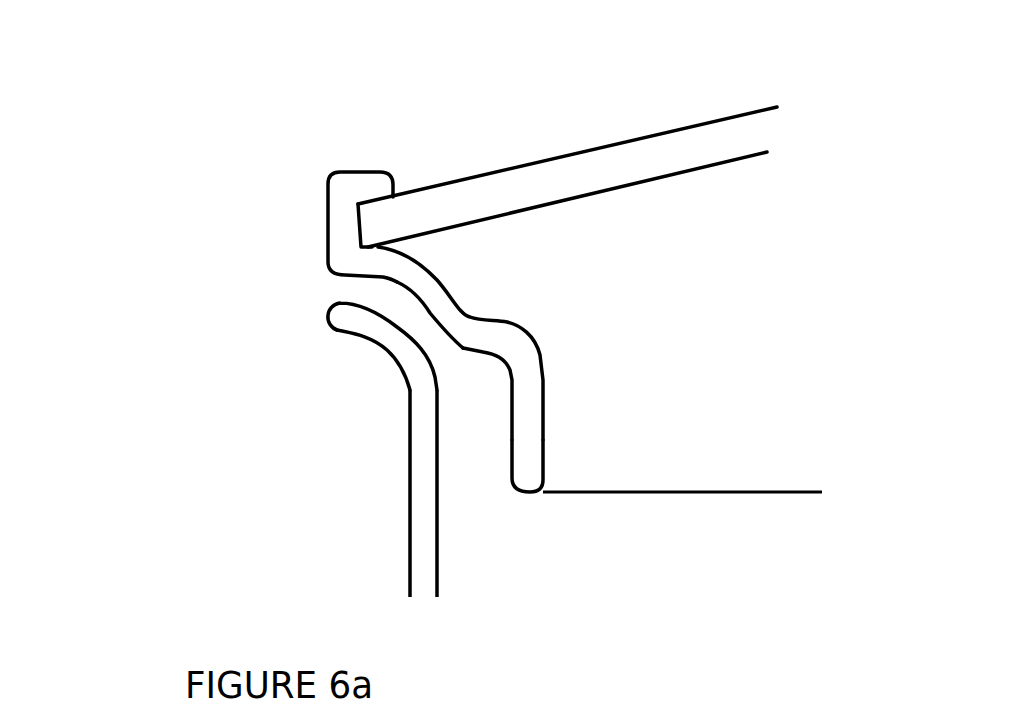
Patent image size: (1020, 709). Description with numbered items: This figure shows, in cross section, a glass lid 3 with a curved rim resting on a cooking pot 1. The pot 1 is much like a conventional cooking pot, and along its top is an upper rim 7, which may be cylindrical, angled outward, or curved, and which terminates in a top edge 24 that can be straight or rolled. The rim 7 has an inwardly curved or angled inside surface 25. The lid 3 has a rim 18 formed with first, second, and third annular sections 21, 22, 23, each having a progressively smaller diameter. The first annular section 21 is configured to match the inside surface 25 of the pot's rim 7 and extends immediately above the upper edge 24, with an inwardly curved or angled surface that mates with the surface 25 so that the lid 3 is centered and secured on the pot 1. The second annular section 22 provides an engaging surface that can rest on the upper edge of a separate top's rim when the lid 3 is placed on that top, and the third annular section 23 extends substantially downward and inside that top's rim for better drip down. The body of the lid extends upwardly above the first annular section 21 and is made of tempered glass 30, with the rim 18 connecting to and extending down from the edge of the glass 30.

The pot 1 is at (335, 532).
The lid 3 is at (263, 197).
The upper rim 7 is at (250, 377).
The rim 18 is at (645, 348).
The first annular section 21 is at (430, 315).
The second annular section 22 is at (480, 353).
The third annular section 23 is at (545, 442).
The top edge 24 is at (413, 297).
The inside surface 25 is at (383, 315).
The tempered glass 30 is at (495, 172).